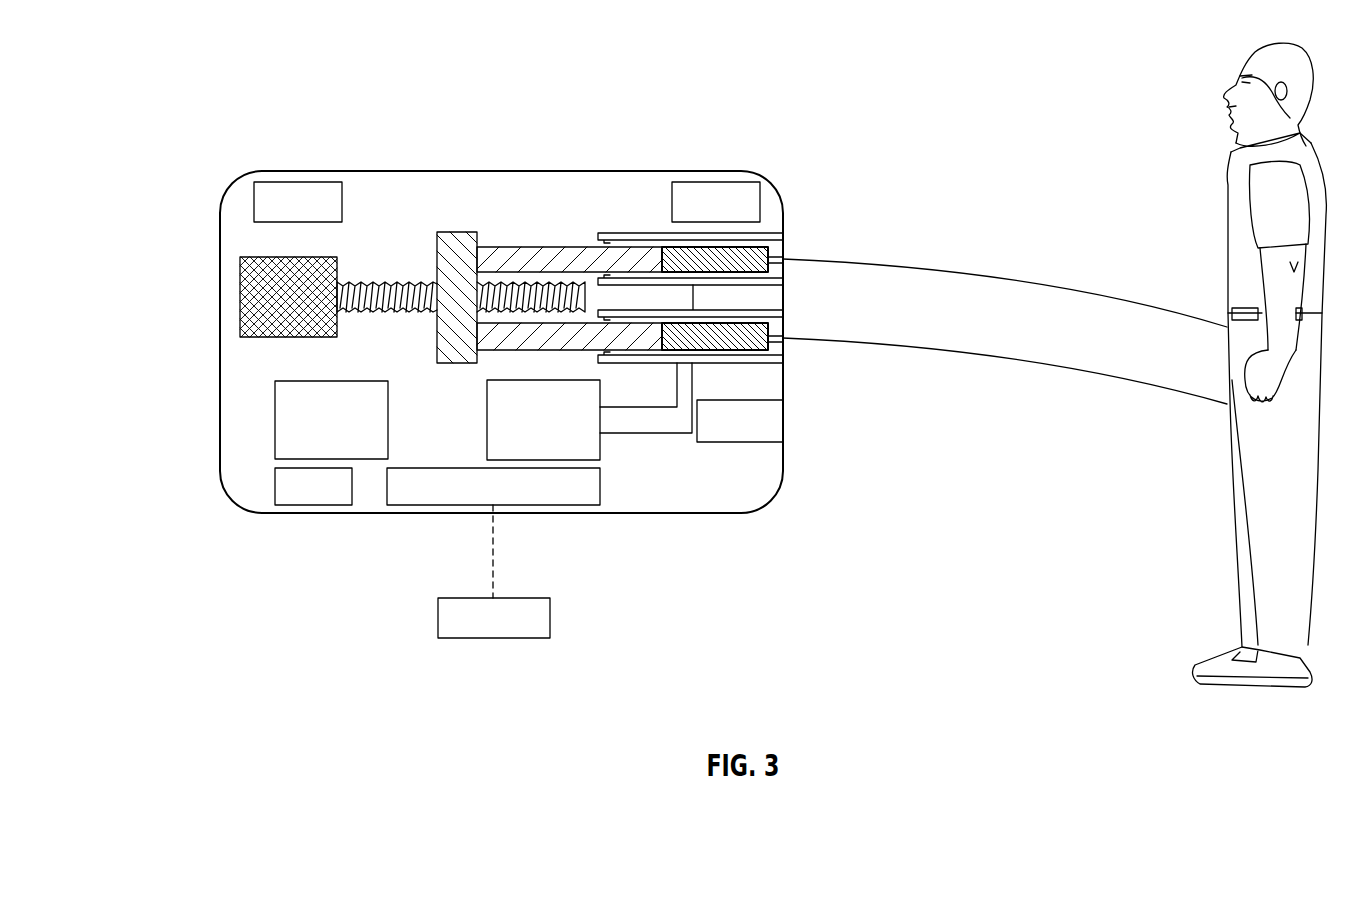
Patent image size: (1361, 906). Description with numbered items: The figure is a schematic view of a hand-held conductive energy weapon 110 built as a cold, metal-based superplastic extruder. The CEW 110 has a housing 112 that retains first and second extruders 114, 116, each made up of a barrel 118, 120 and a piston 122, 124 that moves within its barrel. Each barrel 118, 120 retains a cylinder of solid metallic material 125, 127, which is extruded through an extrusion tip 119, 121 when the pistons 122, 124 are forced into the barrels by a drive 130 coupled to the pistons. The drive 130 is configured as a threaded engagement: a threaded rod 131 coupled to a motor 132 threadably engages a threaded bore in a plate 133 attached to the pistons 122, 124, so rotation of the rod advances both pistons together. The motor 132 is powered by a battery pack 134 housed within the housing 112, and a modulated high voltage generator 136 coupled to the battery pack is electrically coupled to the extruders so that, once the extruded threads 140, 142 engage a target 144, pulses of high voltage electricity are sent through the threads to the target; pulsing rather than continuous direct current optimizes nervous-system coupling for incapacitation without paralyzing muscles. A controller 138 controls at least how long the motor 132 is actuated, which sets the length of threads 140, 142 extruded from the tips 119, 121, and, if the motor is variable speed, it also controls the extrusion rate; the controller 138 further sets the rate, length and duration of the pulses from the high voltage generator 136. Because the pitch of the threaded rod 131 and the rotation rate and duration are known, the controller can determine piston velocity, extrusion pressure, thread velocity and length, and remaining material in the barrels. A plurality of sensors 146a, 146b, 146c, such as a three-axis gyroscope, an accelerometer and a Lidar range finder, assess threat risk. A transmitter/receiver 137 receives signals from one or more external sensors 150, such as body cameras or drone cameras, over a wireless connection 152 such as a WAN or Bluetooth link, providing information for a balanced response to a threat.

The conductive energy weapon (CEW) 110 is at (243, 522).
The housing 112 is at (413, 124).
The first extruder 114 is at (770, 236).
The second extruder 116 is at (734, 370).
The first barrel 118 is at (610, 233).
The first extrusion tip 119 is at (790, 262).
The second barrel 120 is at (672, 364).
The second extrusion tip 121 is at (790, 340).
The first piston 122 is at (538, 248).
The second piston 124 is at (497, 350).
The solid metallic material 125 is at (682, 247).
The solid metallic material 127 is at (710, 350).
The drive 130 is at (379, 283).
The threaded rod 131 is at (380, 312).
The motor 132 is at (240, 292).
The plate 133 is at (470, 235).
The battery pack 134 is at (275, 417).
The modulated high voltage generator 136 is at (487, 432).
The transmitter/receiver 137 is at (275, 487).
The controller 138 is at (582, 505).
The extruded thread 140 is at (1042, 278).
The extruded thread 142 is at (1035, 356).
The target 144 is at (1242, 538).
The sensor 146a is at (300, 182).
The sensor 146b is at (722, 182).
The sensor 146c is at (765, 444).
The external sensor 150 is at (438, 618).
The wireless connection 152 is at (493, 562).